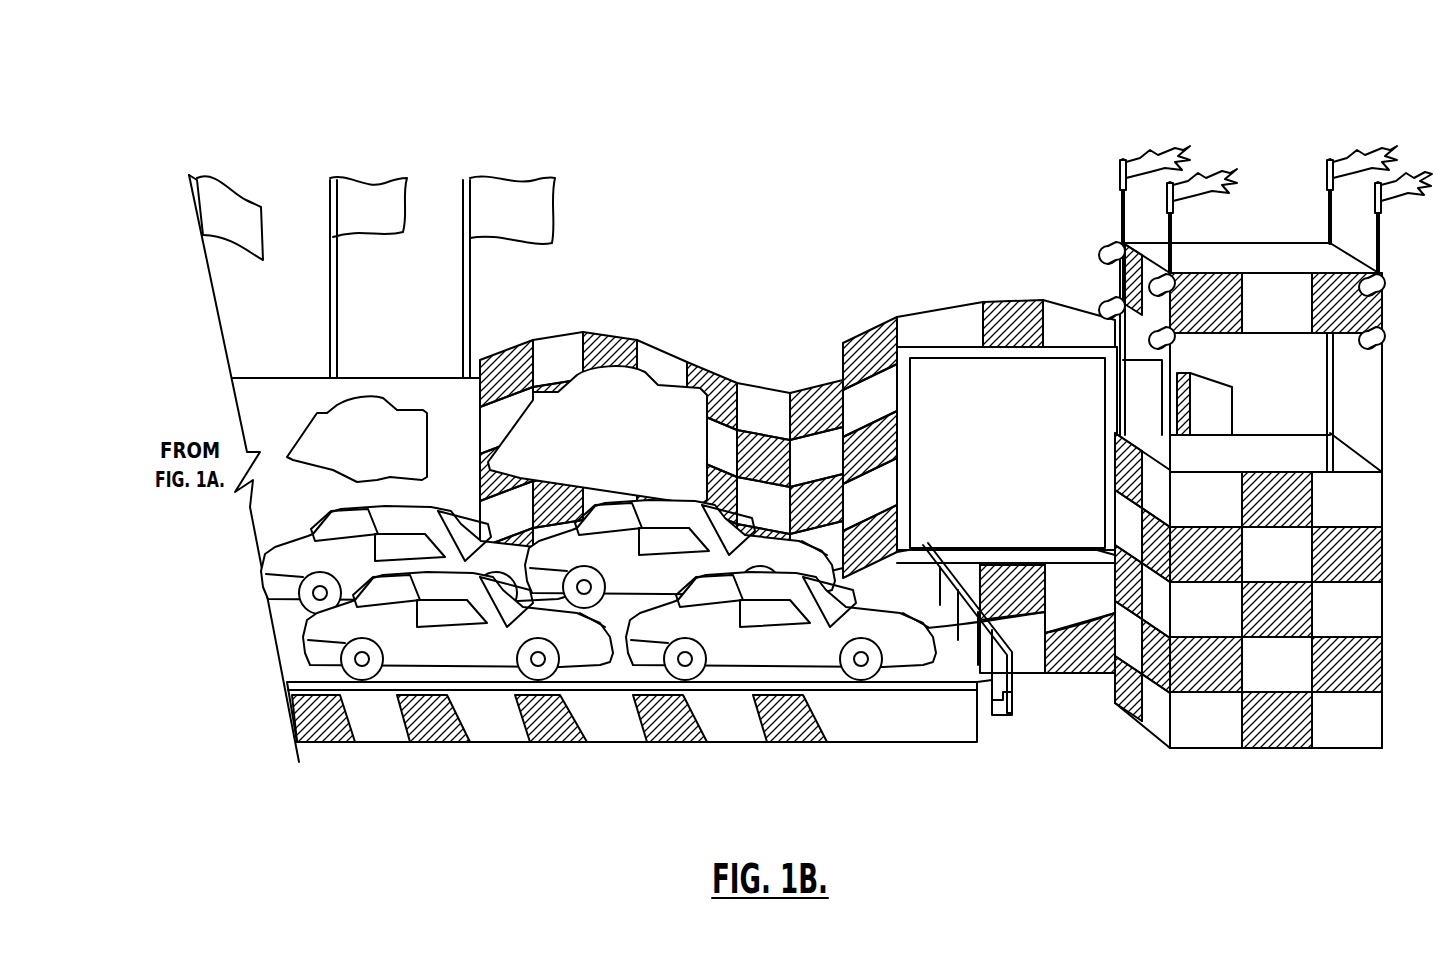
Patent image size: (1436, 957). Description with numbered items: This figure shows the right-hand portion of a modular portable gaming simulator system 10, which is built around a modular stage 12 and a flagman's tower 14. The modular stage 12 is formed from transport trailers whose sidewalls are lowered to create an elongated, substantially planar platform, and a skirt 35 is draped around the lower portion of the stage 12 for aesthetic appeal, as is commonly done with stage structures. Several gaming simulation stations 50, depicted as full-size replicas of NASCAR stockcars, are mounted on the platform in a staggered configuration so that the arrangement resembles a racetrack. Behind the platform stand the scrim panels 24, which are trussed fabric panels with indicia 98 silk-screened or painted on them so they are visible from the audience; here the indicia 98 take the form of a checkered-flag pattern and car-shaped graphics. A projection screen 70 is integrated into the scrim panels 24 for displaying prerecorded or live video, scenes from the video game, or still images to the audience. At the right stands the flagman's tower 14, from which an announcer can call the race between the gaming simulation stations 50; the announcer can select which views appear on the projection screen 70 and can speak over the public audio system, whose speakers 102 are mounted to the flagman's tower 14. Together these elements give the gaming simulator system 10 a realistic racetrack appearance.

The modular portable gaming simulator system 10 is at (1281, 146).
The modular stage 12 is at (940, 270).
The flagman's tower 14 is at (1091, 186).
The scrim panels 24 is at (597, 332).
The skirt 35 is at (883, 730).
The gaming simulation stations 50 is at (342, 513).
The projection screens 70 is at (1060, 347).
The indicia 98 is at (672, 388).
The speakers 102 is at (1150, 345).